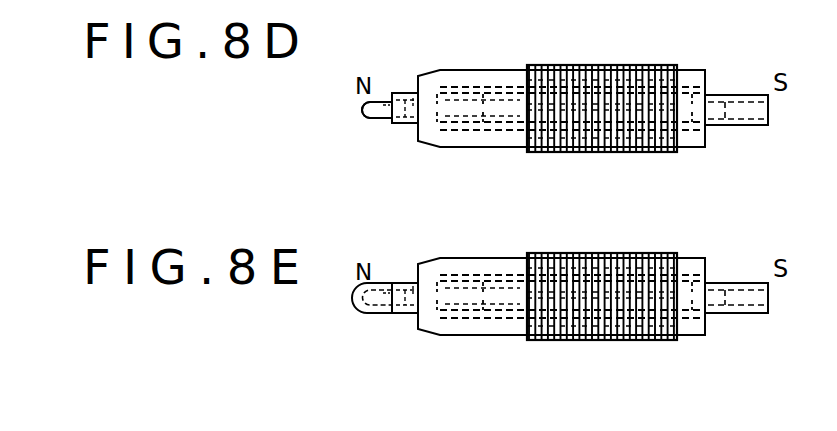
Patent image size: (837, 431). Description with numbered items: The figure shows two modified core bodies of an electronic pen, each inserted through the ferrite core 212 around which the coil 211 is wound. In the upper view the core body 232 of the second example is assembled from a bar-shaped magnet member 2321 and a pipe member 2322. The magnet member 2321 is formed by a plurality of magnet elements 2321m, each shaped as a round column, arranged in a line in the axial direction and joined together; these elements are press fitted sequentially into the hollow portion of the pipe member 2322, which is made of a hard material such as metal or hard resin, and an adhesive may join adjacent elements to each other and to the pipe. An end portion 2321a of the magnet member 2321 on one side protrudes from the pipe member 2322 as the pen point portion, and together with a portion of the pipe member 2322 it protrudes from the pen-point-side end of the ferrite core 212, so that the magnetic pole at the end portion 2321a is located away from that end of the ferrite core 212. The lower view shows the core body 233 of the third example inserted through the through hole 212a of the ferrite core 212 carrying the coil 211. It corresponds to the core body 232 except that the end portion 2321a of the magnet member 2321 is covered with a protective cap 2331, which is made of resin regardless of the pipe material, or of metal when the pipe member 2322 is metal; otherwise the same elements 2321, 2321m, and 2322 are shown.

In FIG. 8D, the coil 211 is at (616, 154).
In FIG. 8E, the coil 211 is at (616, 342).
In FIG. 8D, the ferrite core 212 is at (507, 148).
In FIG. 8E, the ferrite core 212 is at (507, 336).
In FIG. 8D, the through hole 212a is at (467, 131).
In FIG. 8E, the through hole 212a is at (467, 319).
In FIG. 8D, the core body 232 is at (400, 112).
In FIG. 8D, the magnet member 2321 is at (358, 113).
In FIG. 8E, the magnet member 2321 is at (329, 325).
In FIG. 8D, the end portion 2321a is at (361, 107).
In FIG. 8D, the magnet element 2321m is at (412, 104).
In FIG. 8E, the magnet element 2321m is at (412, 292).
In FIG. 8D, the pipe member 2322 is at (404, 125).
In FIG. 8E, the pipe member 2322 is at (405, 315).
In FIG. 8E, the core body 233 is at (302, 347).
In FIG. 8E, the protective cap 2331 is at (352, 296).